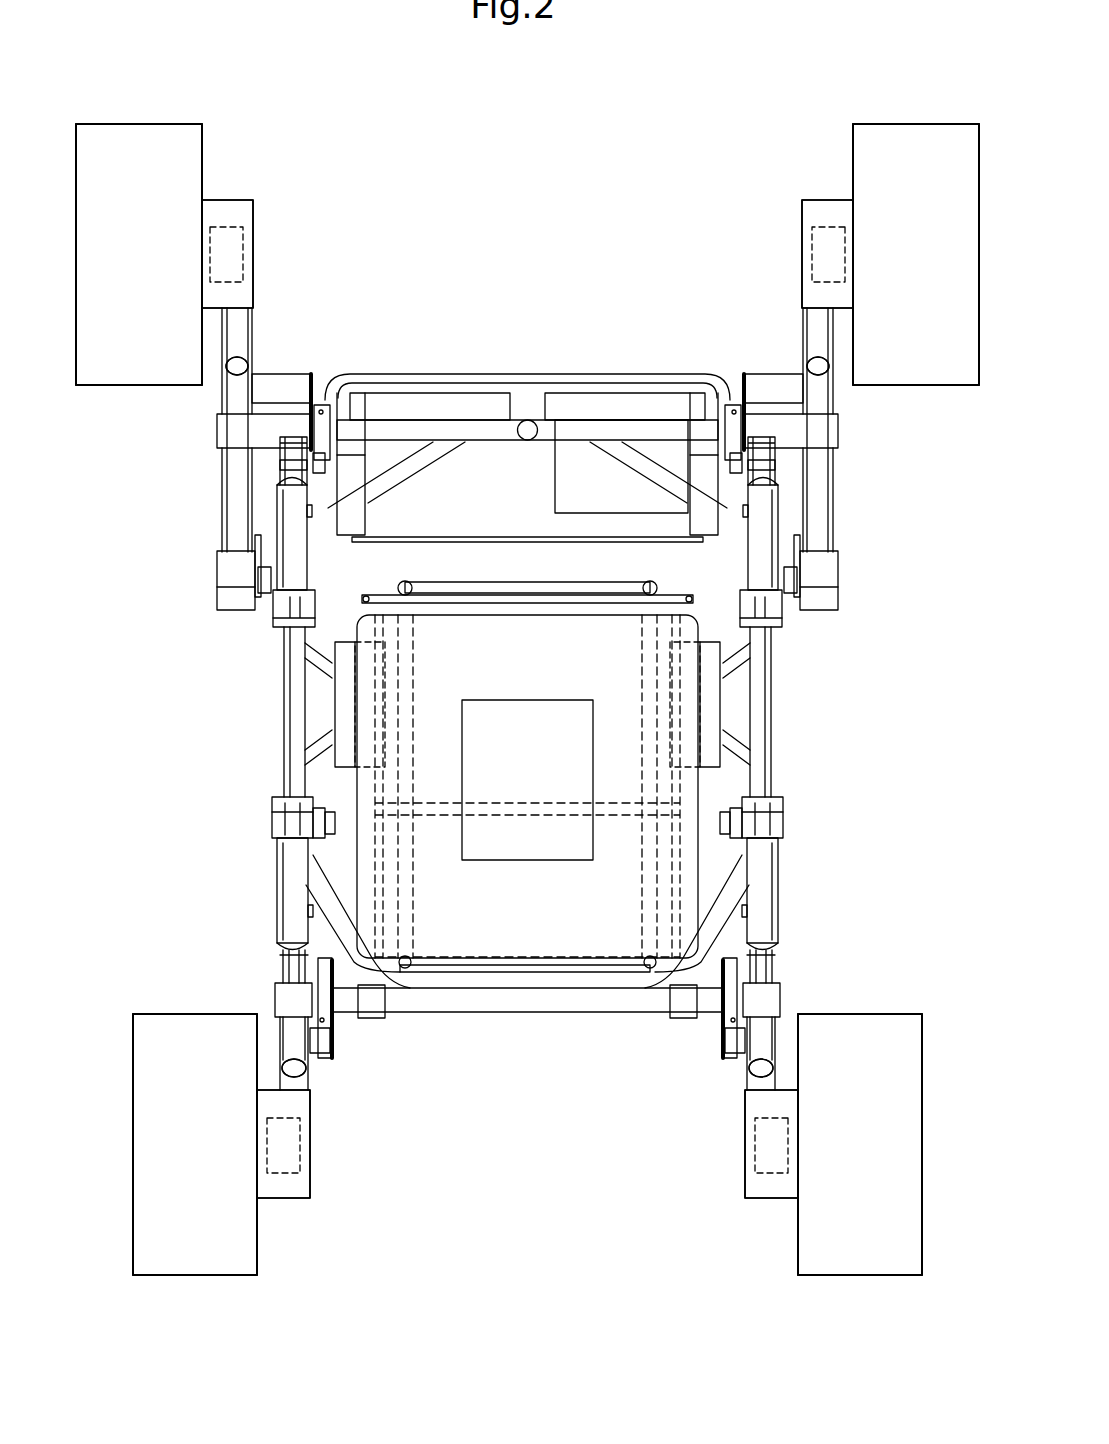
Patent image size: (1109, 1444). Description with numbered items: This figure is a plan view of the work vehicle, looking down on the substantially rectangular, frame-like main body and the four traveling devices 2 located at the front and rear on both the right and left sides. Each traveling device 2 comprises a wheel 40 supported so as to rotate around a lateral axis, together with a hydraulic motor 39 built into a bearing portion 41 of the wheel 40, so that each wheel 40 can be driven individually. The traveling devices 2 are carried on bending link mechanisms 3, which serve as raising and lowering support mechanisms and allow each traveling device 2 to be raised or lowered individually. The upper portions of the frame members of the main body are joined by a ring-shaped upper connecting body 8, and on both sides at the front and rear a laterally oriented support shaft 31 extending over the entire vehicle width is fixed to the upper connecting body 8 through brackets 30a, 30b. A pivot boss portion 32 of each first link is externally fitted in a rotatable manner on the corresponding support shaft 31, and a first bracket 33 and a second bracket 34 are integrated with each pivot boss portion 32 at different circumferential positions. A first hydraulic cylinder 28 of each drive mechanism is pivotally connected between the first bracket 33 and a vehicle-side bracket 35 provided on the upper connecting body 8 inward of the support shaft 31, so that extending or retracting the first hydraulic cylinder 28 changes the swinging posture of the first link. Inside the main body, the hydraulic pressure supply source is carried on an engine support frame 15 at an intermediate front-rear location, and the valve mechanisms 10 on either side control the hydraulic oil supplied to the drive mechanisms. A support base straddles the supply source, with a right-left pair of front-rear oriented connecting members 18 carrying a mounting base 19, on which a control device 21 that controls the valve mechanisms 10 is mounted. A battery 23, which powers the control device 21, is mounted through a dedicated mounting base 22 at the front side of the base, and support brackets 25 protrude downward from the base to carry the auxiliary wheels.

The traveling device 2 is at (236, 101).
The bending link mechanism 3 is at (196, 573).
The upper connecting body 8 is at (665, 458).
The valve mechanism 10 is at (345, 690).
The engine support frame 15 is at (555, 585).
The connecting member 18 is at (665, 900).
The mounting base 19 is at (530, 940).
The control device 21 is at (500, 705).
The mounting base 22 is at (432, 470).
The battery 23 is at (558, 472).
The support bracket 25 is at (295, 815).
The first hydraulic cylinder 28 is at (290, 510).
The bracket 30a is at (695, 500).
The bracket 30b is at (373, 1020).
The support shaft 31 is at (490, 430).
The pivot boss portion 32 is at (278, 415).
The first bracket 33 is at (280, 465).
The second bracket 34 is at (232, 400).
The vehicle-side bracket 35 is at (272, 617).
The hydraulic motor 39 is at (243, 248).
The wheel 40 is at (120, 120).
The bearing portion 41 is at (230, 205).